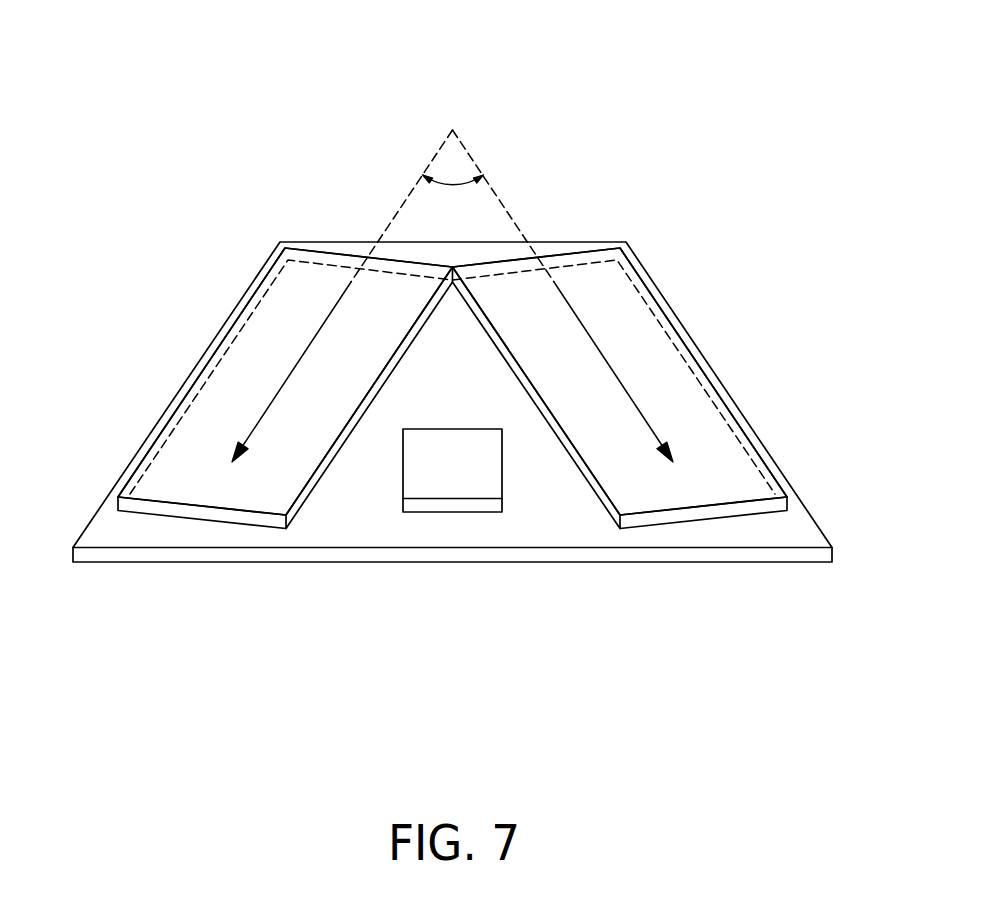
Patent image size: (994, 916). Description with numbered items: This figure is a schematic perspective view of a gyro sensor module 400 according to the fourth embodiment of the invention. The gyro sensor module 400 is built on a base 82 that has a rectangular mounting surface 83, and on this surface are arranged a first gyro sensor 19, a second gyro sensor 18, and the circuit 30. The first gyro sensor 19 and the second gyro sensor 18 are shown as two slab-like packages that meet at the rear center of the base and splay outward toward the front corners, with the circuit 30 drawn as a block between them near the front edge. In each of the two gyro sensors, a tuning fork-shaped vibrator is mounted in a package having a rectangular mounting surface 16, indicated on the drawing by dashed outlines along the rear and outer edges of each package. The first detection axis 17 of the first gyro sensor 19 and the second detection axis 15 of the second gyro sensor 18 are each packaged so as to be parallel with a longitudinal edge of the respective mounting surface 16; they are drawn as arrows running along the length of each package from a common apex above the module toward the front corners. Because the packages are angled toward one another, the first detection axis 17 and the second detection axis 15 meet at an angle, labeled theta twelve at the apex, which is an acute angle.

The gyro sensor module 400 is at (813, 37).
The second detection axis 15 is at (276, 390).
The mounting surface 16 is at (287, 285).
The first detection axis 17 is at (633, 396).
The second gyro sensor 18 is at (232, 350).
The first gyro sensor 19 is at (655, 350).
The circuit 30 is at (503, 470).
The base 82 is at (688, 553).
The mounting surface 83 is at (358, 532).